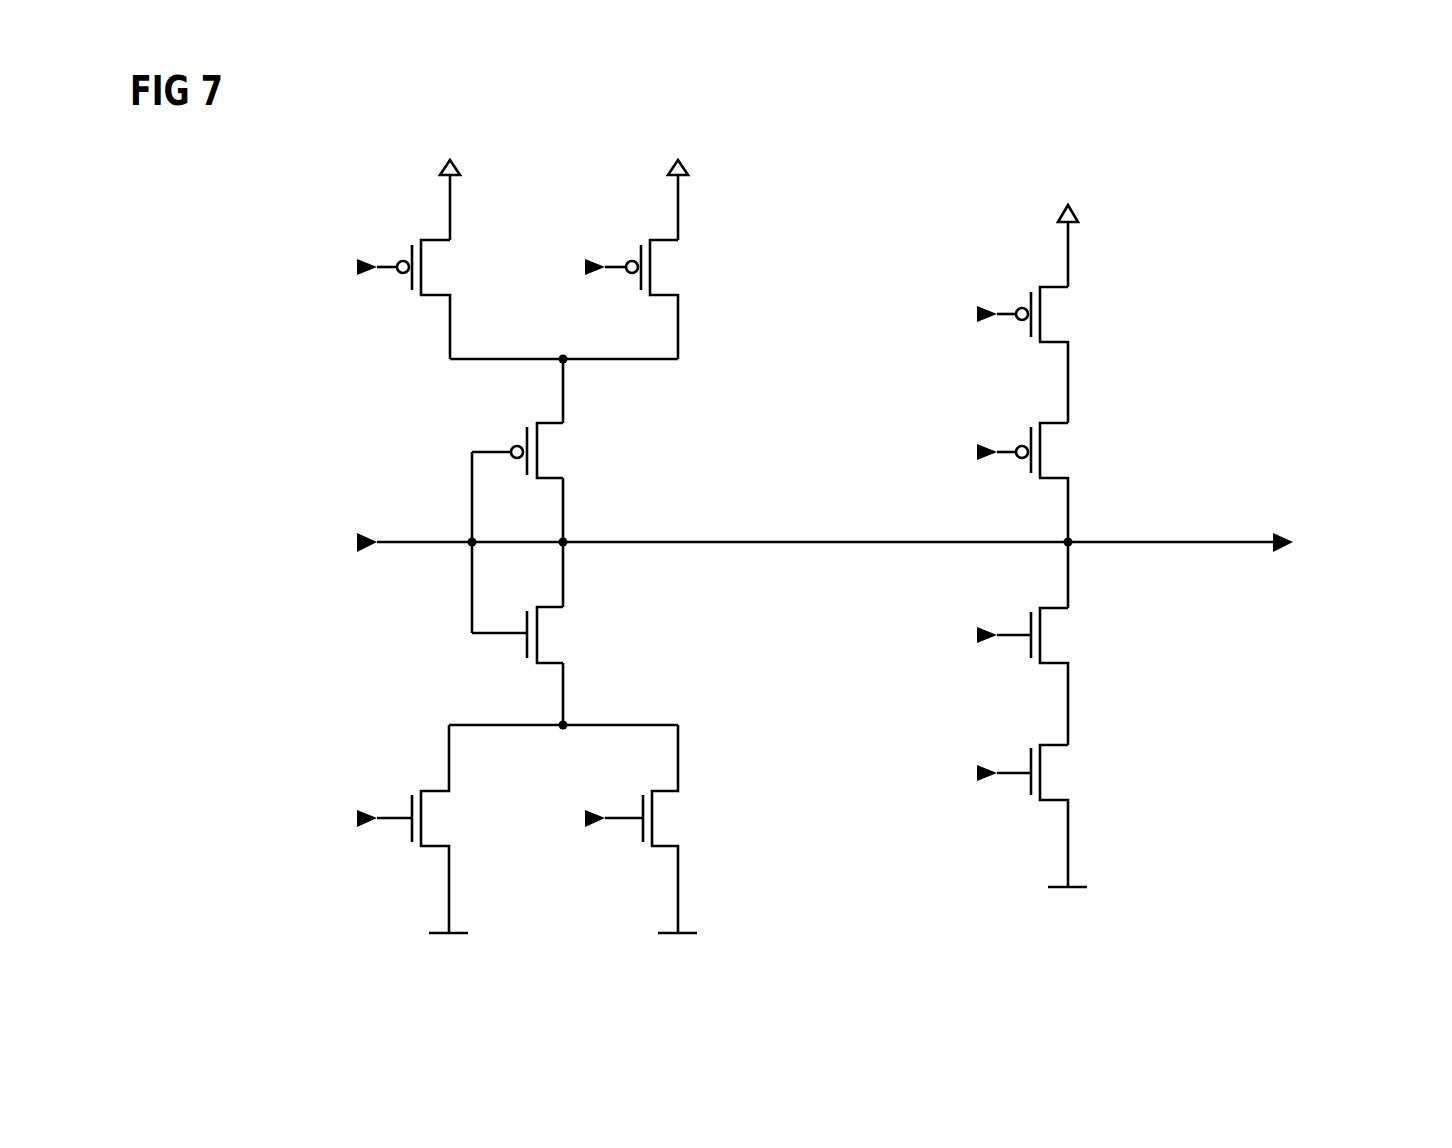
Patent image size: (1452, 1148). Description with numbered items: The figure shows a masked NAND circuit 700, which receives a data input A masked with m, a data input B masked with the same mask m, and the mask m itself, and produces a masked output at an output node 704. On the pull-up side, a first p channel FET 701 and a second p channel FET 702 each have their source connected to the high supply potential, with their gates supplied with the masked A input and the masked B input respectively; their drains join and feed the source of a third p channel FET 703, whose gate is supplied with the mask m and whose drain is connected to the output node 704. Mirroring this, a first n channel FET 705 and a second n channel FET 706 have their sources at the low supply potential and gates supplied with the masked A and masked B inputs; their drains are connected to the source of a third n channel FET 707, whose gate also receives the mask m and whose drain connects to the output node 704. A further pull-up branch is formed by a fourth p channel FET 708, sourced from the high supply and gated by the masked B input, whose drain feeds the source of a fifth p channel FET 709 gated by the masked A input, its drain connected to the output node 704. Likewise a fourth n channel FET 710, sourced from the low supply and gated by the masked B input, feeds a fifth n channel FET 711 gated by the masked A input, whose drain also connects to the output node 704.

The masked NAND circuit 700 is at (1345, 118).
The first p channel FET 701 is at (424, 226).
The second p channel FET 702 is at (652, 233).
The third p channel FET 703 is at (529, 426).
The output node 704 is at (736, 542).
The first n channel FET 705 is at (657, 792).
The second n channel FET 706 is at (432, 778).
The third n channel FET 707 is at (564, 597).
The fourth p channel FET 708 is at (1045, 281).
The fifth p channel FET 709 is at (1045, 421).
The fourth n channel FET 710 is at (1045, 743).
The fifth n channel FET 711 is at (1045, 604).